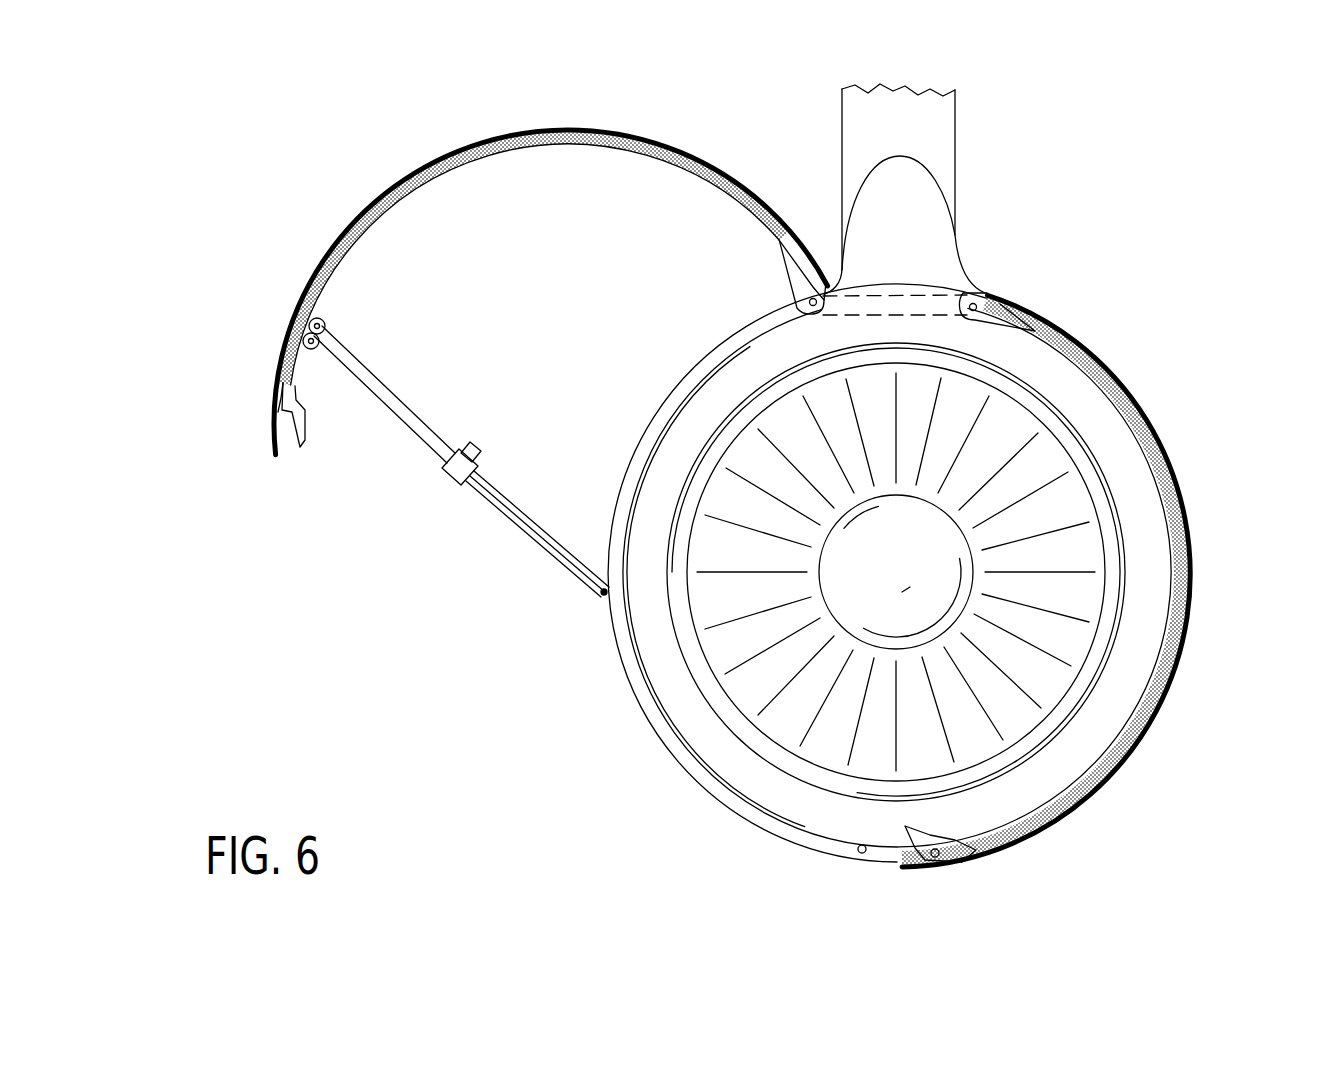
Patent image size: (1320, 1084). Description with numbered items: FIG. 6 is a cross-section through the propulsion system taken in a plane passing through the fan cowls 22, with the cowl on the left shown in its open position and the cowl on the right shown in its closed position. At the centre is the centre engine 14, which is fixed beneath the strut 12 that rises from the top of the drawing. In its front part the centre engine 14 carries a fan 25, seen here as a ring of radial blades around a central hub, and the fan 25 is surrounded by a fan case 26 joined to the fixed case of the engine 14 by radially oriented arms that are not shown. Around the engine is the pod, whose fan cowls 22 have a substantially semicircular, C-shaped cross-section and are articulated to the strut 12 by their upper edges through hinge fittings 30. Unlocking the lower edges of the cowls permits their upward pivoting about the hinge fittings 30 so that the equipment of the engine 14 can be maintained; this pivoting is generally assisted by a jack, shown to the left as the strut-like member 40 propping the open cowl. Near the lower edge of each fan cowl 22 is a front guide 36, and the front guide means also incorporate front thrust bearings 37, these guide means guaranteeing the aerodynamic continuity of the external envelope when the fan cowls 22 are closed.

The strut 12 is at (940, 128).
The centre engine 14 is at (692, 684).
The fan cowl 22 is at (373, 202).
The fan 25 is at (1088, 520).
The fan case 26 is at (1085, 675).
The hinge fitting 30 is at (790, 263).
The front guide 36 is at (312, 440).
The front thrust bearing 37 is at (850, 853).
The hold-open strut 40 is at (472, 375).